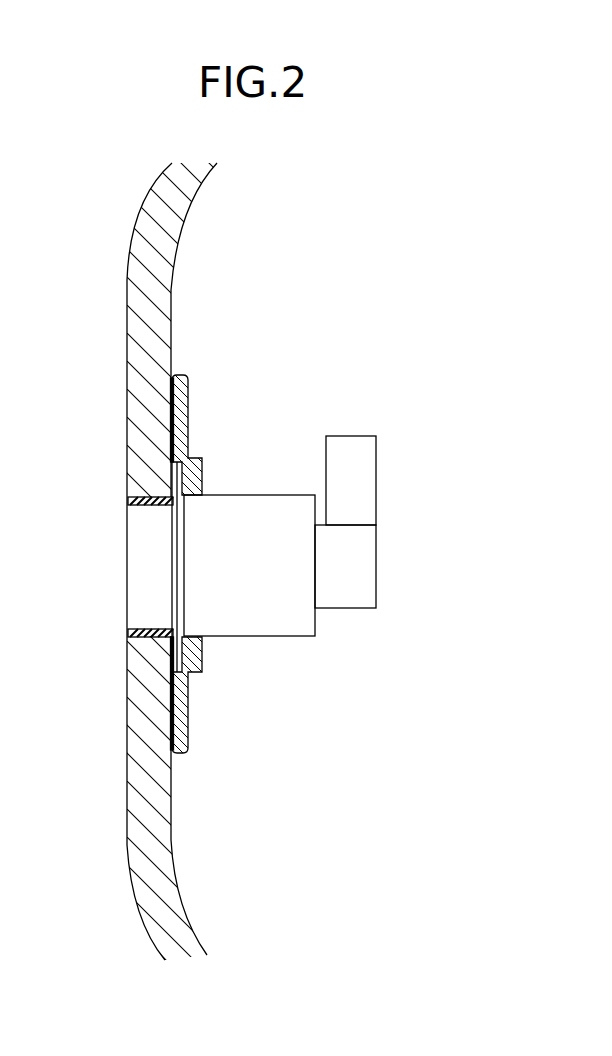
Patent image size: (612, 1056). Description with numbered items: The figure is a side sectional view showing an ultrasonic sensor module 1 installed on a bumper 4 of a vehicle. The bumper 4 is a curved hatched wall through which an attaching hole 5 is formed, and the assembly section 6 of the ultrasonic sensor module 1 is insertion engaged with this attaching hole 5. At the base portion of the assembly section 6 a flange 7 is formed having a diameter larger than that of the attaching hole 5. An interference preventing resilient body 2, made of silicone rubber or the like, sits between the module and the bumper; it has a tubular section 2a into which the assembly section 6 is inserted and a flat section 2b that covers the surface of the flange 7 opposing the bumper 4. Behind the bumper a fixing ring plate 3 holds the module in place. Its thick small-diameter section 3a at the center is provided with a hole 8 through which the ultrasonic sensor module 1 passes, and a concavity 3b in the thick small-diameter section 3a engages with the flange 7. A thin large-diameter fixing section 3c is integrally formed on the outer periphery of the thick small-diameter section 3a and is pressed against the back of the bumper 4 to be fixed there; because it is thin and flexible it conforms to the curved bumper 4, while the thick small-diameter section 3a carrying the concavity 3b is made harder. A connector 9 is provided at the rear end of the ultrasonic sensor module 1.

The ultrasonic sensor module 1 is at (282, 508).
The interference preventing resilient body 2 is at (130, 502).
The tubular section 2a is at (150, 628).
The flat section 2b is at (162, 665).
The fixing ring plate 3 is at (203, 662).
The thick small-diameter section 3a is at (203, 484).
The concavity 3b is at (190, 682).
The thin large-diameter fixing section 3c is at (190, 728).
The bumper 4 is at (137, 323).
The attaching hole 5 is at (143, 646).
The assembly section 6 is at (135, 556).
The flange 7 is at (186, 460).
The hole 8 is at (187, 637).
The connector 9 is at (358, 480).